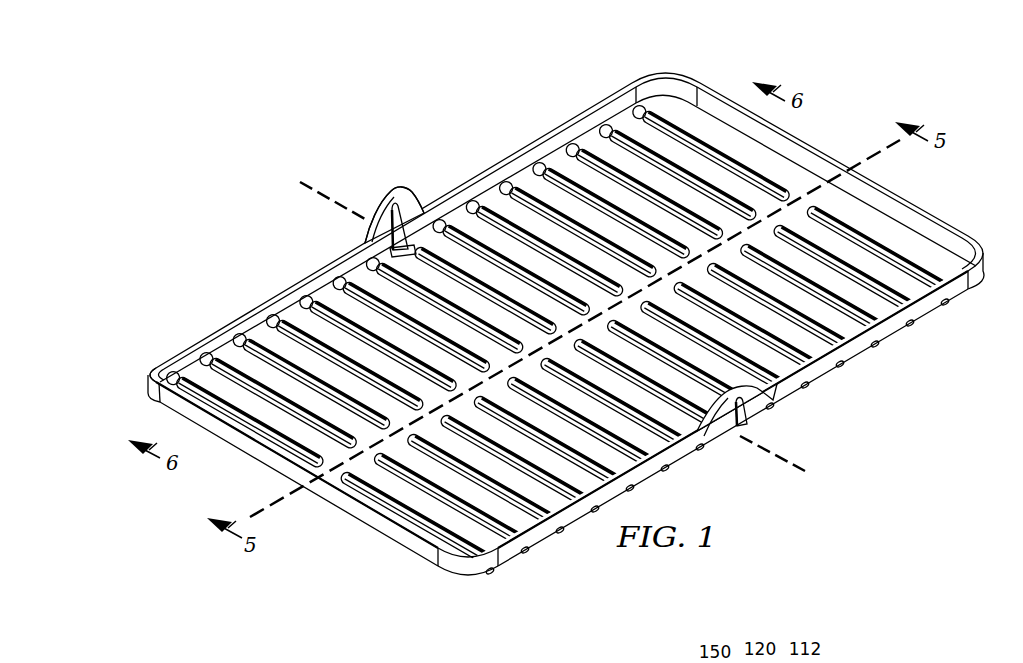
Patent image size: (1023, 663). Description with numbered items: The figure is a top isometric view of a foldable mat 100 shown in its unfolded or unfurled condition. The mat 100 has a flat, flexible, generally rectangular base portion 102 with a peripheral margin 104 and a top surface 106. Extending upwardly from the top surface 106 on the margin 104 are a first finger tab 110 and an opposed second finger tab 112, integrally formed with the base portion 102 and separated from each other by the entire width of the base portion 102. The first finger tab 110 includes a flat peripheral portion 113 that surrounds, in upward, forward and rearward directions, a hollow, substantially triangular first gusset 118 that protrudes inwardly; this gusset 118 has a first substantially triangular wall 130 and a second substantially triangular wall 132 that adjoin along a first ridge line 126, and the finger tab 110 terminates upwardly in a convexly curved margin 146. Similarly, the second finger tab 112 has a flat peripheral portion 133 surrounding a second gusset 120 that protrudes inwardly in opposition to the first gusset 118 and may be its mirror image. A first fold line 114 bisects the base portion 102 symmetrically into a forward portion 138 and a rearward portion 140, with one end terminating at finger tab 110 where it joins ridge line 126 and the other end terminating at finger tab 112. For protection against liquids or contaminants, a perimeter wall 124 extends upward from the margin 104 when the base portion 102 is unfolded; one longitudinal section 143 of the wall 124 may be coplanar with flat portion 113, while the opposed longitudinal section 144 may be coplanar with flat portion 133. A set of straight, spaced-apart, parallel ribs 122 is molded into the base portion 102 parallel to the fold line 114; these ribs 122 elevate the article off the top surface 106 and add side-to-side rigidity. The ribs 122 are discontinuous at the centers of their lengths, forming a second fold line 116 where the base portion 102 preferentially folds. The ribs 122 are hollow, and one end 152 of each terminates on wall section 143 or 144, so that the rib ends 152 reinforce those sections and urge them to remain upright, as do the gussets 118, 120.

The foldable mat 100 is at (234, 150).
The base portion 102 is at (872, 347).
The peripheral margin 104 is at (561, 311).
The top surface 106 is at (290, 308).
The first finger tab 110 is at (390, 192).
The second finger tab 112 is at (766, 433).
The peripheral portion 113 is at (370, 230).
The first fold line 114 is at (800, 465).
The second fold line 116 is at (808, 190).
The first gusset 118 is at (424, 200).
The second gusset 120 is at (740, 428).
The ribs 122 is at (583, 232).
The perimeter wall 124 is at (676, 88).
The first ridge line 126 is at (403, 186).
The first substantially triangular wall 130 is at (366, 243).
The second substantially triangular wall 132 is at (428, 205).
The peripheral portion 133 is at (724, 423).
The forward portion 138 is at (415, 517).
The rearward portion 140 is at (881, 251).
The longitudinal section 143 is at (220, 342).
The longitudinal section 144 is at (941, 301).
The convexly curved margin 146 is at (380, 210).
The rib end 152 is at (561, 533).